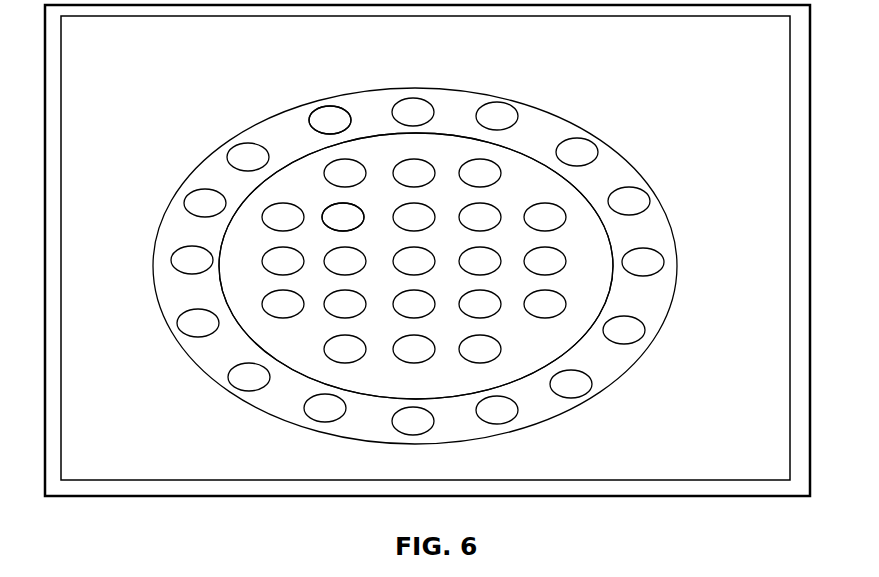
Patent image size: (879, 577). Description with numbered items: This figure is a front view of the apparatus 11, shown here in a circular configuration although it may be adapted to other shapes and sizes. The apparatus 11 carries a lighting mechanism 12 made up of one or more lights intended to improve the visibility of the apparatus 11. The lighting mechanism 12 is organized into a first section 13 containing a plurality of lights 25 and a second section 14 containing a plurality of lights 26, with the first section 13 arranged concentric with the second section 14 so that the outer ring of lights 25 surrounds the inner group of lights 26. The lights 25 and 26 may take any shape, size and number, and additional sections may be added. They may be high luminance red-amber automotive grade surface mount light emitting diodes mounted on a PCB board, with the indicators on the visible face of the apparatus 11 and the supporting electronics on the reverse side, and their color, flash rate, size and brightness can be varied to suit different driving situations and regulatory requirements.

The apparatus 11 is at (648, 116).
The lighting mechanism 12 is at (240, 120).
The first section 13 is at (230, 182).
The second section 14 is at (252, 278).
The lights 25 is at (330, 120).
The lights 26 is at (343, 217).